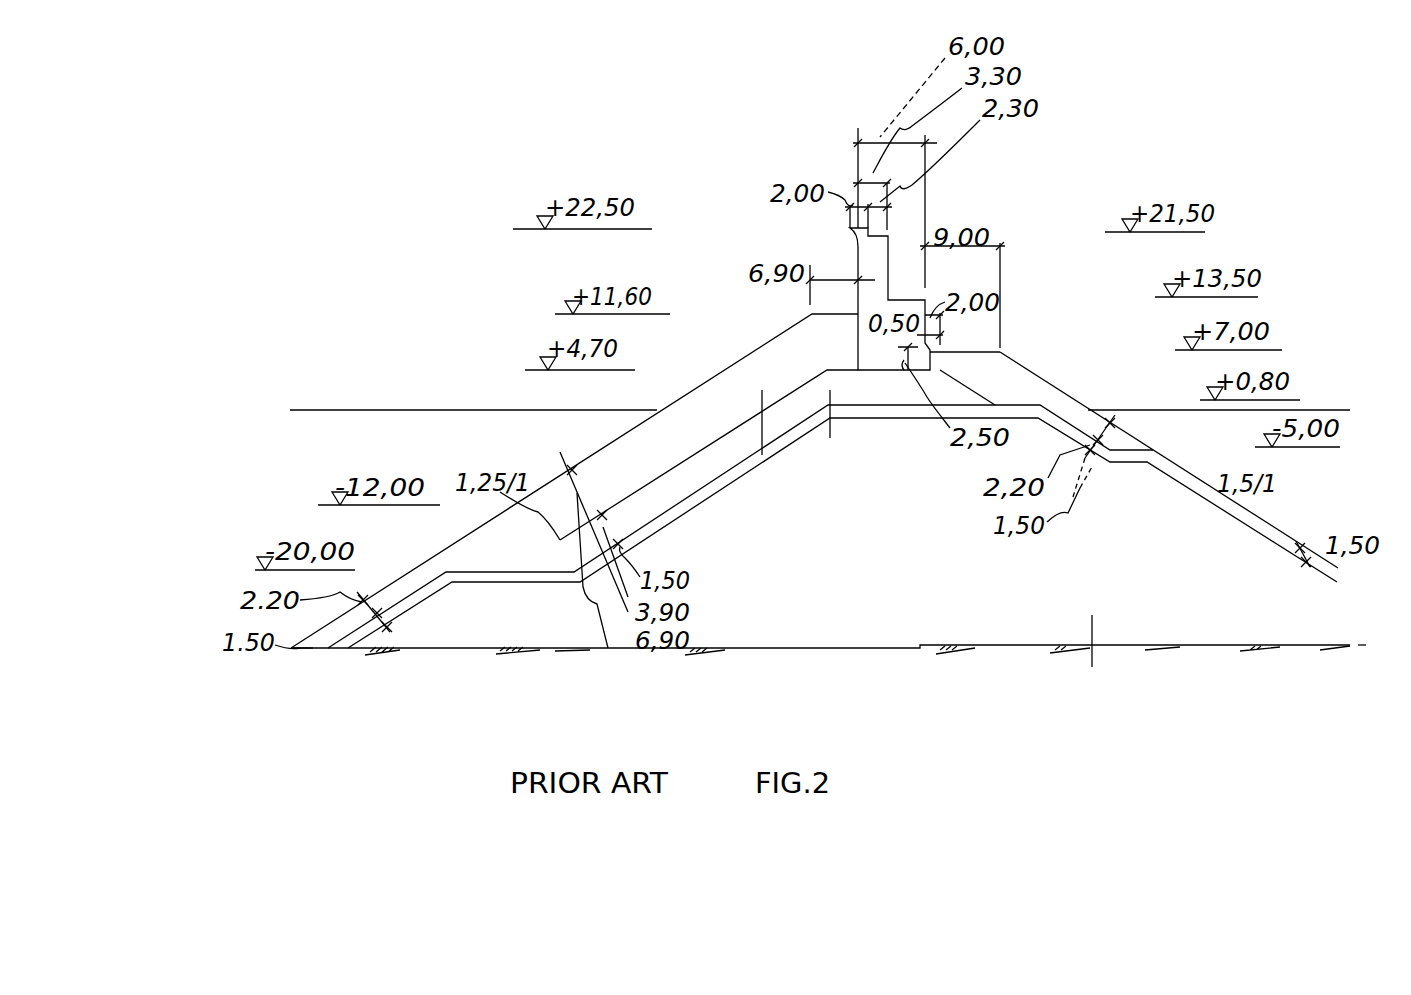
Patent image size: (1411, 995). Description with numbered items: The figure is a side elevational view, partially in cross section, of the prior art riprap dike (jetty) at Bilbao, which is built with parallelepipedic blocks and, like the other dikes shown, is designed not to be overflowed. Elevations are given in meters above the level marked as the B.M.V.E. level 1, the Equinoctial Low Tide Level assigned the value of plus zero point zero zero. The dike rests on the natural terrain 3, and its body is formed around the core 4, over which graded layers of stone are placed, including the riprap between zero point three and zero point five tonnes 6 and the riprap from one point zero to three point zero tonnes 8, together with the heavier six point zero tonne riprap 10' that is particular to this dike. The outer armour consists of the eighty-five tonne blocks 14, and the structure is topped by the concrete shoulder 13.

The B.M.V.E. level 1 is at (455, 410).
The natural terrain 3 is at (920, 646).
The core 4 is at (1092, 667).
The riprap between 0.3 and 0.5 t 6 is at (640, 533).
The riprap from 1.0 to 3.0 t 8 is at (983, 377).
The 6.0 t riprap 10' is at (859, 472).
The concrete shoulder 13 is at (872, 345).
The 85.0 t blocks 14 is at (762, 455).